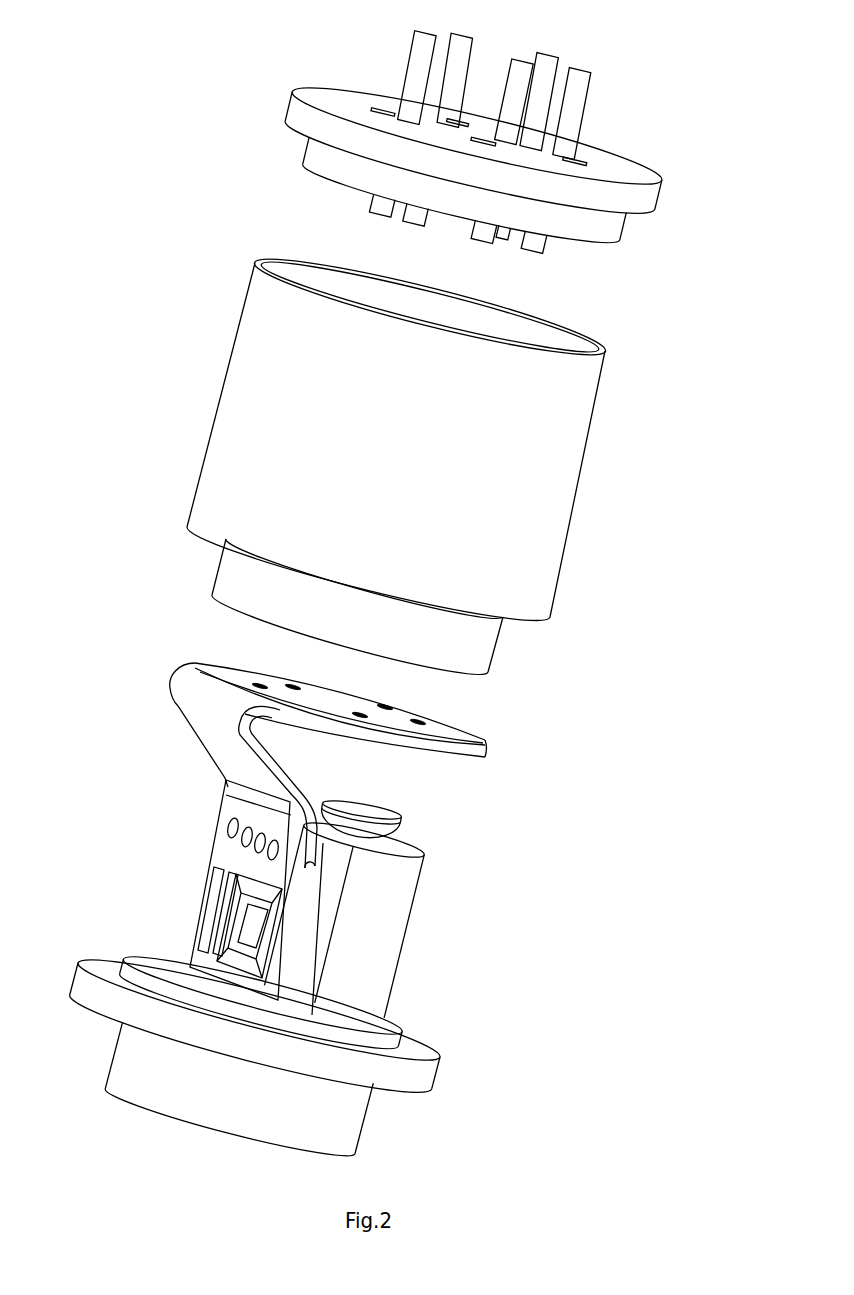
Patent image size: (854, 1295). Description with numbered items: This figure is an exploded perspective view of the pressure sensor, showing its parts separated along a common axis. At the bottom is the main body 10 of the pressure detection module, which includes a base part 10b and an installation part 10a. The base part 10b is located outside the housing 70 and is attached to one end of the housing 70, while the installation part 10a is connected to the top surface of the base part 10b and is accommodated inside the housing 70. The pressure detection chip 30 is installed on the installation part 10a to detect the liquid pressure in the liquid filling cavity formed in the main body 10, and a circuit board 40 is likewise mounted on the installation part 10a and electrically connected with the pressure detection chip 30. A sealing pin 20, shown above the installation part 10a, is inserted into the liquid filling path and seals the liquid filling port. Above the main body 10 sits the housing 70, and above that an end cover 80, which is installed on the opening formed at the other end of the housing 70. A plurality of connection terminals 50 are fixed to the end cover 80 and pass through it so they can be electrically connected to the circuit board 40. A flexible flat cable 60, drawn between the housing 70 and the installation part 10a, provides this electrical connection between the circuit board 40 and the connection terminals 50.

The main body 10 is at (309, 1006).
The installation part 10a is at (393, 930).
The base part 10b is at (437, 1063).
The sealing pin 20 is at (377, 813).
The pressure detection chip 30 is at (243, 922).
The circuit board 40 is at (217, 877).
The connection terminals 50 is at (577, 95).
The flexible flat cable 60 is at (289, 839).
The housing 70 is at (222, 462).
The end cover 80 is at (328, 93).